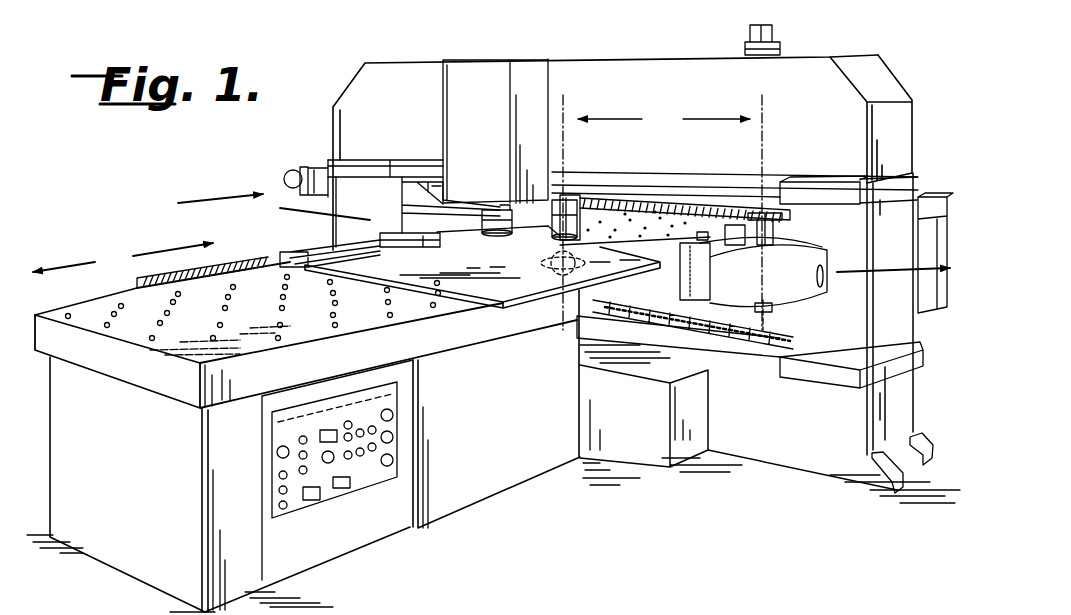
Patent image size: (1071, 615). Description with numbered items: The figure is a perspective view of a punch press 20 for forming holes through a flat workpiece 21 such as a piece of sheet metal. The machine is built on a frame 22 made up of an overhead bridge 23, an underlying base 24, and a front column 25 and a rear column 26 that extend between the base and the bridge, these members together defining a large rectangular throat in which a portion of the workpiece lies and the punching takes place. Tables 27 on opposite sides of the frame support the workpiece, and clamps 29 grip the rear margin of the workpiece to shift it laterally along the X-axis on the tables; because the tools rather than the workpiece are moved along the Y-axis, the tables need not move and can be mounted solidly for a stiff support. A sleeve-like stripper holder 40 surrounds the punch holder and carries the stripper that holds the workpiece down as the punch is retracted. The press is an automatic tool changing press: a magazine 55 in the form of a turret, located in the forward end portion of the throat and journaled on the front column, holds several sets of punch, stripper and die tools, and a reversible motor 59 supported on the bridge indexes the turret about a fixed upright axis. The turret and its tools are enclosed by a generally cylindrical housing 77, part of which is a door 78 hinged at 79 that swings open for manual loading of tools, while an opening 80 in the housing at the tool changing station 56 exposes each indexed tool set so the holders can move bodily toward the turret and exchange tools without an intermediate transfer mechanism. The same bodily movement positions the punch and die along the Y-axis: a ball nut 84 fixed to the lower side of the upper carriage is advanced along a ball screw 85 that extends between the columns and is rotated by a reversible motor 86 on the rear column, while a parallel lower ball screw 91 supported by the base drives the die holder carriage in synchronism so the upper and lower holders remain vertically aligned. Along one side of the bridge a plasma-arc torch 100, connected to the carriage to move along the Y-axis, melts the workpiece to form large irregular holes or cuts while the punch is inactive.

The punch press 20 is at (397, 55).
The workpiece 21 is at (487, 287).
The frame 22 is at (622, 68).
The bridge 23 is at (858, 68).
The base 24 is at (805, 458).
The front column 25 is at (889, 343).
The rear column 26 is at (343, 228).
The tables 27 is at (402, 305).
The clamps 29 is at (287, 255).
The stripper holder 40 is at (557, 237).
The magazine 55 is at (790, 240).
The tool changing station 56 is at (703, 237).
The reversible motor 59 is at (770, 33).
The housing 77 is at (773, 180).
The door 78 is at (800, 303).
The hinge 79 is at (715, 282).
The opening 80 is at (733, 230).
The ball nut 84 is at (597, 193).
The ball screw 85 is at (687, 235).
The reversible motor 86 is at (310, 167).
The lower ball screw 91 is at (747, 327).
The plasma-arc torch 100 is at (490, 240).